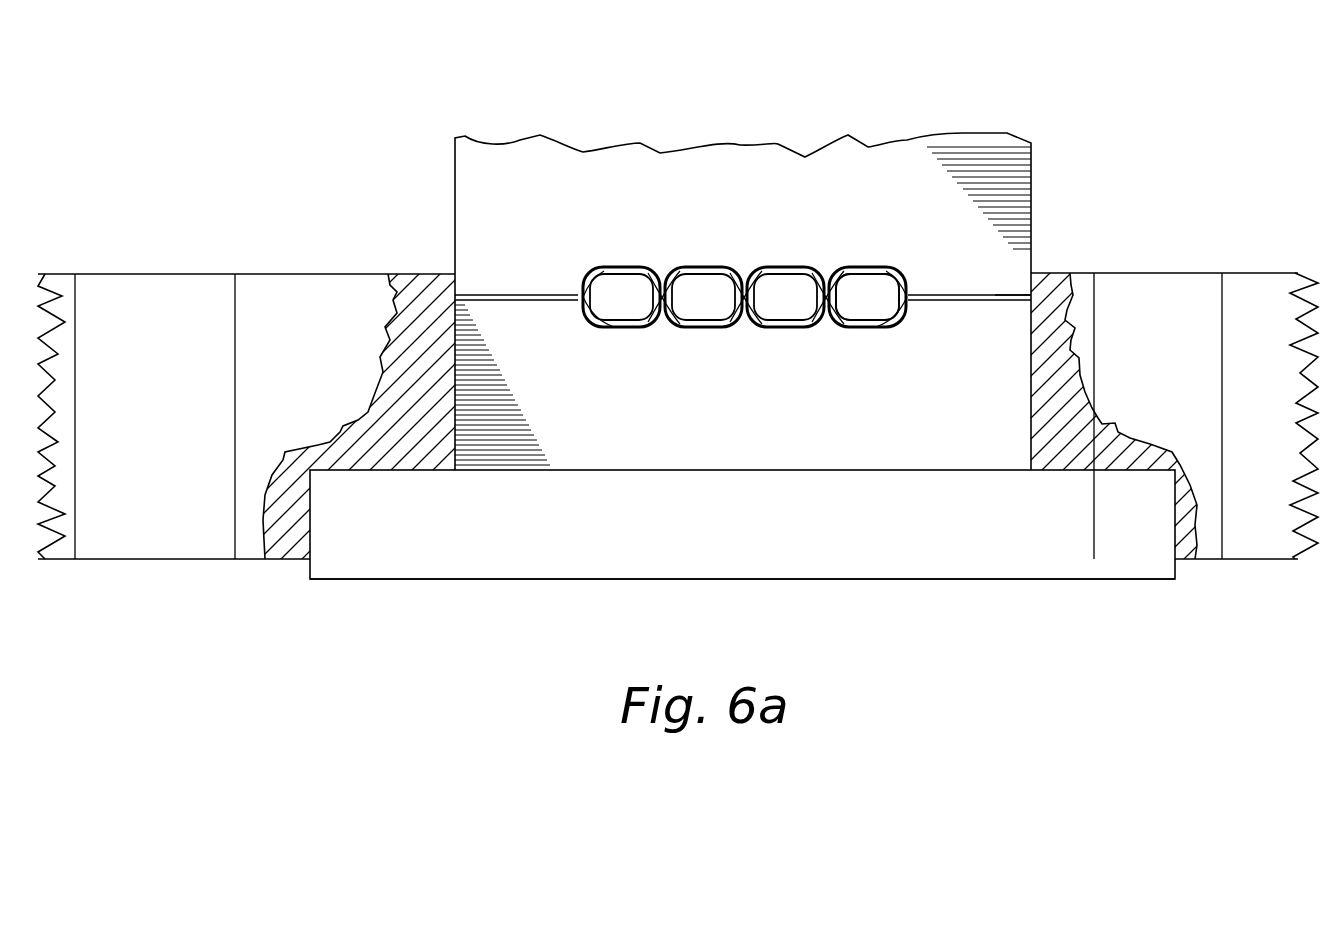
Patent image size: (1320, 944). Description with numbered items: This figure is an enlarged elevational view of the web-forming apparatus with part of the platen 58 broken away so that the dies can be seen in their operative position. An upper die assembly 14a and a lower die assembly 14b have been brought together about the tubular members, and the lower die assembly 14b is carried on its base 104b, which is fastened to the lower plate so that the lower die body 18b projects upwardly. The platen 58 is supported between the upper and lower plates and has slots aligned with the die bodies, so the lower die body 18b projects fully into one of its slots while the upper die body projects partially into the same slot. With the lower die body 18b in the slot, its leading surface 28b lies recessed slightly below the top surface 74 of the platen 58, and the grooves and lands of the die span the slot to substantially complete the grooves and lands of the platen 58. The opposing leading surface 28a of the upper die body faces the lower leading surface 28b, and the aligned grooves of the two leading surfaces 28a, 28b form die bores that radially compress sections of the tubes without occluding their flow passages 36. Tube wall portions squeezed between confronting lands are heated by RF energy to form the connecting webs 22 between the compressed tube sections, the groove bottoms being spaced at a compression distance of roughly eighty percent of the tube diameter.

The upper die assembly 14a is at (515, 122).
The lower die assembly 14b is at (829, 581).
The lower die body 18b is at (957, 435).
The connecting web 22 is at (822, 284).
The leading surface 28a is at (937, 300).
The leading surface 28b is at (997, 296).
The flow passage 36 is at (866, 296).
The platen 58 is at (158, 295).
The top surface 74 is at (338, 273).
The base 104b is at (505, 555).